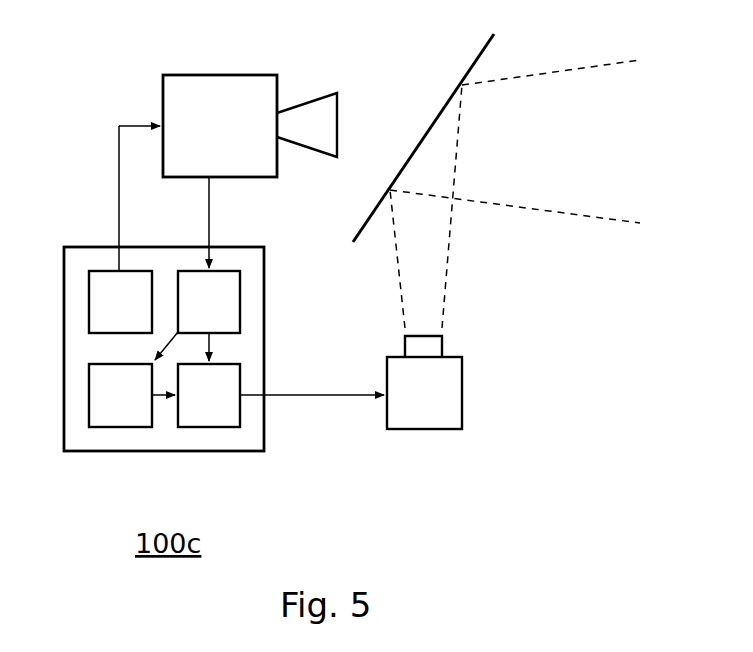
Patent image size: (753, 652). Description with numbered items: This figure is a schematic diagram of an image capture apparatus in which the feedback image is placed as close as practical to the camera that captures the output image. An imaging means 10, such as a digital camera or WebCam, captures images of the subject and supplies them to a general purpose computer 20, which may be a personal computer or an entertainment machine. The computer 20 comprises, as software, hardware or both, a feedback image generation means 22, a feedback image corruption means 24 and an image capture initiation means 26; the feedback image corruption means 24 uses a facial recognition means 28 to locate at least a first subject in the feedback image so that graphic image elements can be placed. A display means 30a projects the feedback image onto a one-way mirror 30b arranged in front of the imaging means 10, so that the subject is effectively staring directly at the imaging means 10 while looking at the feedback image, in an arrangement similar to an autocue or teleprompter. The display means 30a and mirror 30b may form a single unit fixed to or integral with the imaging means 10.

The imaging means 10 is at (163, 101).
The general purpose computer 20 is at (132, 349).
The feedback image generation means 22 is at (209, 302).
The feedback image corruption means 24 is at (209, 395).
The image capture initiation means 26 is at (120, 302).
The facial recognition means 28 is at (120, 395).
The display means 30a is at (443, 429).
The one-way mirror 30b is at (478, 52).